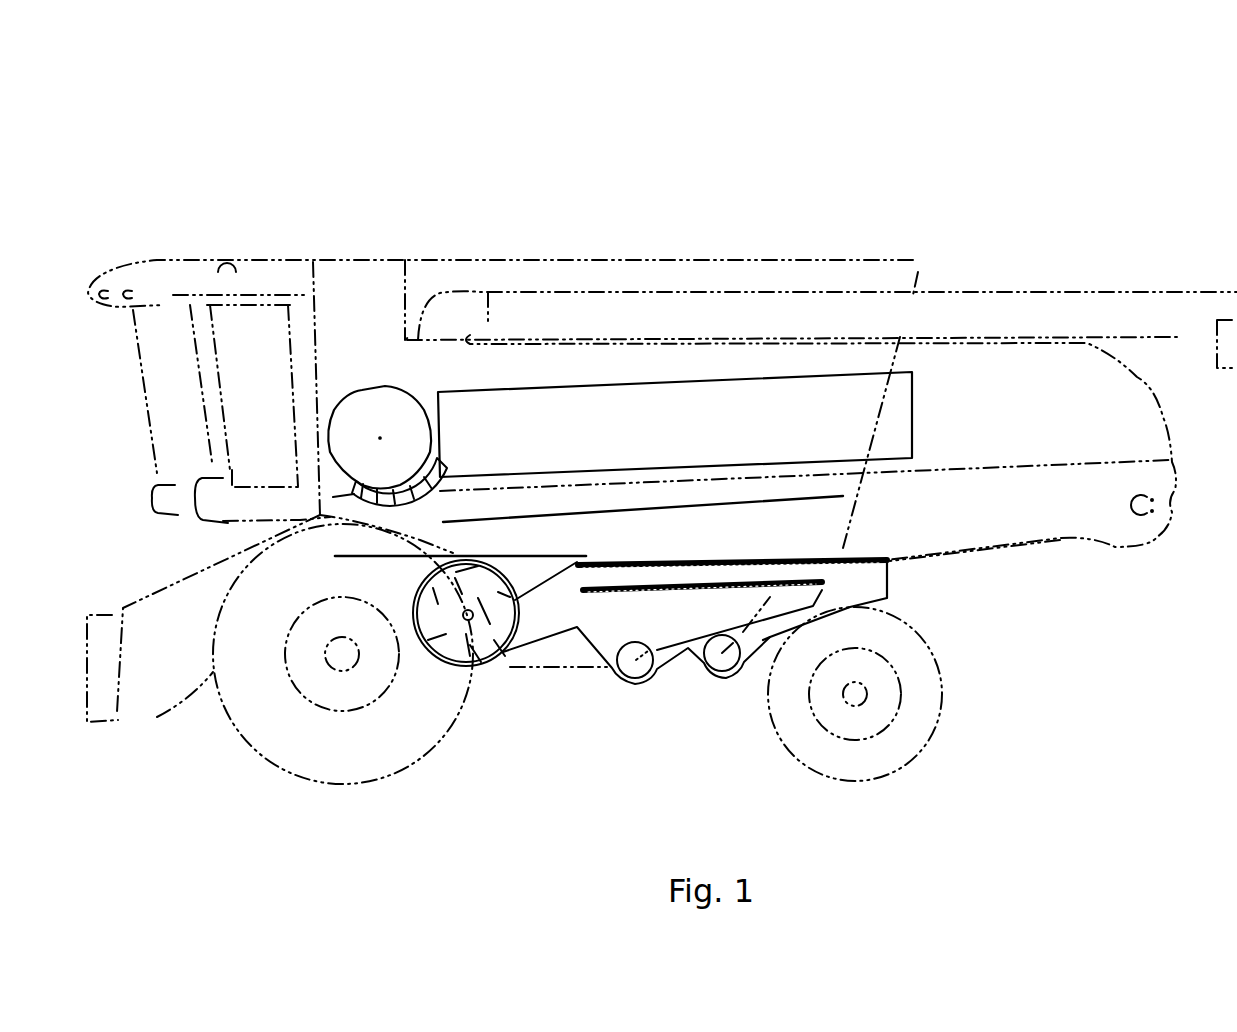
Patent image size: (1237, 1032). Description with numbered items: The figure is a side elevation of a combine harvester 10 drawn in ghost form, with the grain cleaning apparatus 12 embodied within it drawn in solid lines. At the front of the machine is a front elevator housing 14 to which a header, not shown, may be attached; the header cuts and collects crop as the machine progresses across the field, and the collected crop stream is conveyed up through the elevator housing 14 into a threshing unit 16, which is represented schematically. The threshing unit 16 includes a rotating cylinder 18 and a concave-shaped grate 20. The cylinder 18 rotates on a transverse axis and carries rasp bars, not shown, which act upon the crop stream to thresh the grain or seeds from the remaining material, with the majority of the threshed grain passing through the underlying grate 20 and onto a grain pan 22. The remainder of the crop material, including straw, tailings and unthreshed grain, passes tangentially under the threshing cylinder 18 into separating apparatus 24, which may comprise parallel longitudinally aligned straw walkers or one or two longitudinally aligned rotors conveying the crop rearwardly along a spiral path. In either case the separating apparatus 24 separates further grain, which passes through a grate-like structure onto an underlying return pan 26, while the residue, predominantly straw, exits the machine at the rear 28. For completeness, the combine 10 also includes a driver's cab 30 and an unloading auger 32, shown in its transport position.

The combine harvester 10 is at (216, 88).
The grain cleaning apparatus 12 is at (600, 692).
The front elevator housing 14 is at (135, 708).
The threshing unit 16 is at (362, 390).
The rotating cylinder 18 is at (381, 390).
The concave-shaped grate 20 is at (416, 495).
The grain pan 22 is at (352, 559).
The separating apparatus 24 is at (508, 392).
The return pan 26 is at (780, 506).
The rear 28 is at (1031, 546).
The driver's cab 30 is at (195, 258).
The unloading auger 32 is at (1174, 295).